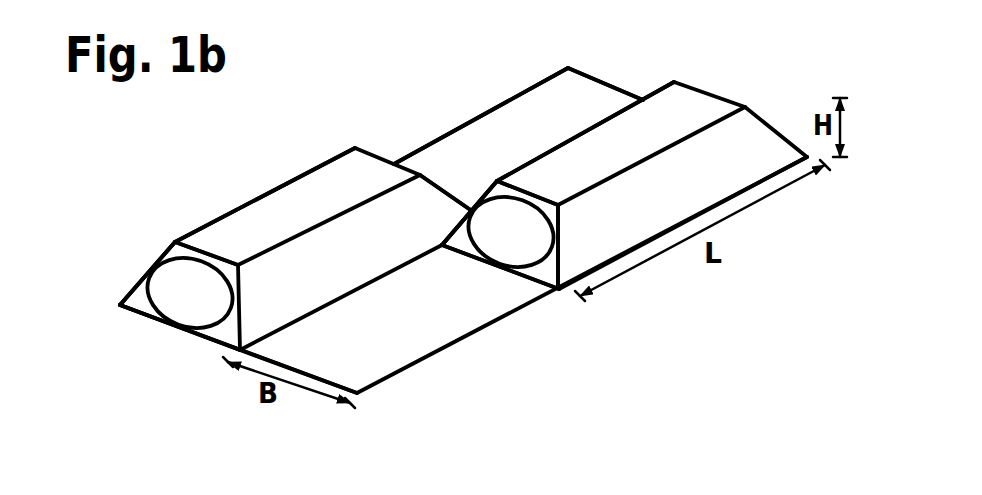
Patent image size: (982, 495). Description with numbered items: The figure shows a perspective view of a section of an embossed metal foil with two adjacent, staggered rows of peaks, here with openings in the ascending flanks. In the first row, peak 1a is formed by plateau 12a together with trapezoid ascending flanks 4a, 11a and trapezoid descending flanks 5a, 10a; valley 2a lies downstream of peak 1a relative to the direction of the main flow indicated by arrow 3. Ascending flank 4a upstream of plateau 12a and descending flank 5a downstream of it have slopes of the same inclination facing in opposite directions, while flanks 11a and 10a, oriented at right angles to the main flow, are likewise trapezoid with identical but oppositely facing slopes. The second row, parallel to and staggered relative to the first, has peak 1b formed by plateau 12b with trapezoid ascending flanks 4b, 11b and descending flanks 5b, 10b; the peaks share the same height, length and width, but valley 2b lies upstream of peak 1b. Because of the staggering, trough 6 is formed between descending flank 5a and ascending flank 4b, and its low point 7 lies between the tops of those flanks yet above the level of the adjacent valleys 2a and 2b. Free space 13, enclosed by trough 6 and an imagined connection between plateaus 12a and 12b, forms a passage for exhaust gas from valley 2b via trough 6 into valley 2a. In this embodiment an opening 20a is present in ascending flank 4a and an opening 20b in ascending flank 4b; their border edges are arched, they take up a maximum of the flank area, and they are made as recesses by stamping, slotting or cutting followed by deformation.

The peak 1a is at (431, 263).
The peak 1b is at (626, 209).
The valley 2a is at (563, 90).
The valley 2b is at (363, 356).
The arrow indicating direction of the main flow 3 is at (188, 420).
The ascending flank 4a is at (142, 297).
The ascending flank 4b is at (527, 268).
The descending flank 5a is at (437, 177).
The descending flank 5b is at (760, 112).
The trough 6 is at (482, 143).
The low point 7 is at (456, 238).
The descending flank 10a is at (192, 335).
The descending flank 10b is at (657, 90).
The ascending flank 11a is at (230, 213).
The ascending flank 11b is at (580, 253).
The plateau 12a is at (358, 173).
The plateau 12b is at (703, 113).
The free space 13 is at (462, 157).
The opening 20a is at (183, 295).
The opening 20b is at (500, 242).